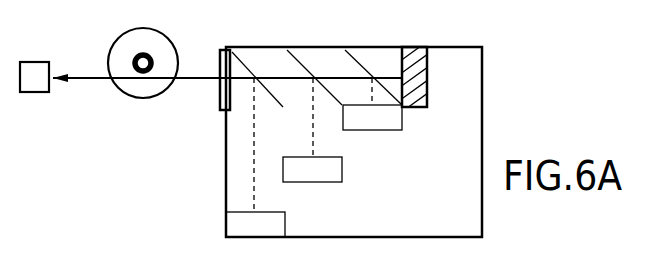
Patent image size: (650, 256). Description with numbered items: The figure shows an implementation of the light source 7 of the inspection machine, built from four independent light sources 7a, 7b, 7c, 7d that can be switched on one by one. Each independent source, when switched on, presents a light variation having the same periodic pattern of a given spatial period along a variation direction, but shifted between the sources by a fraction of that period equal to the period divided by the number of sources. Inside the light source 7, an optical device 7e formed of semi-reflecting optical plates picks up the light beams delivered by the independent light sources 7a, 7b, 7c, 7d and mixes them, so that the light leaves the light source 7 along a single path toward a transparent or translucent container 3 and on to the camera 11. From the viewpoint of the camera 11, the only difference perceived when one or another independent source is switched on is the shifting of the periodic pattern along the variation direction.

The camera 11 is at (33, 93).
The container 3 is at (143, 98).
The light source 7 is at (483, 137).
The independent light source 7a is at (428, 72).
The independent light source 7b is at (403, 128).
The independent light source 7c is at (343, 170).
The independent light source 7d is at (286, 220).
The optical device 7e is at (325, 62).